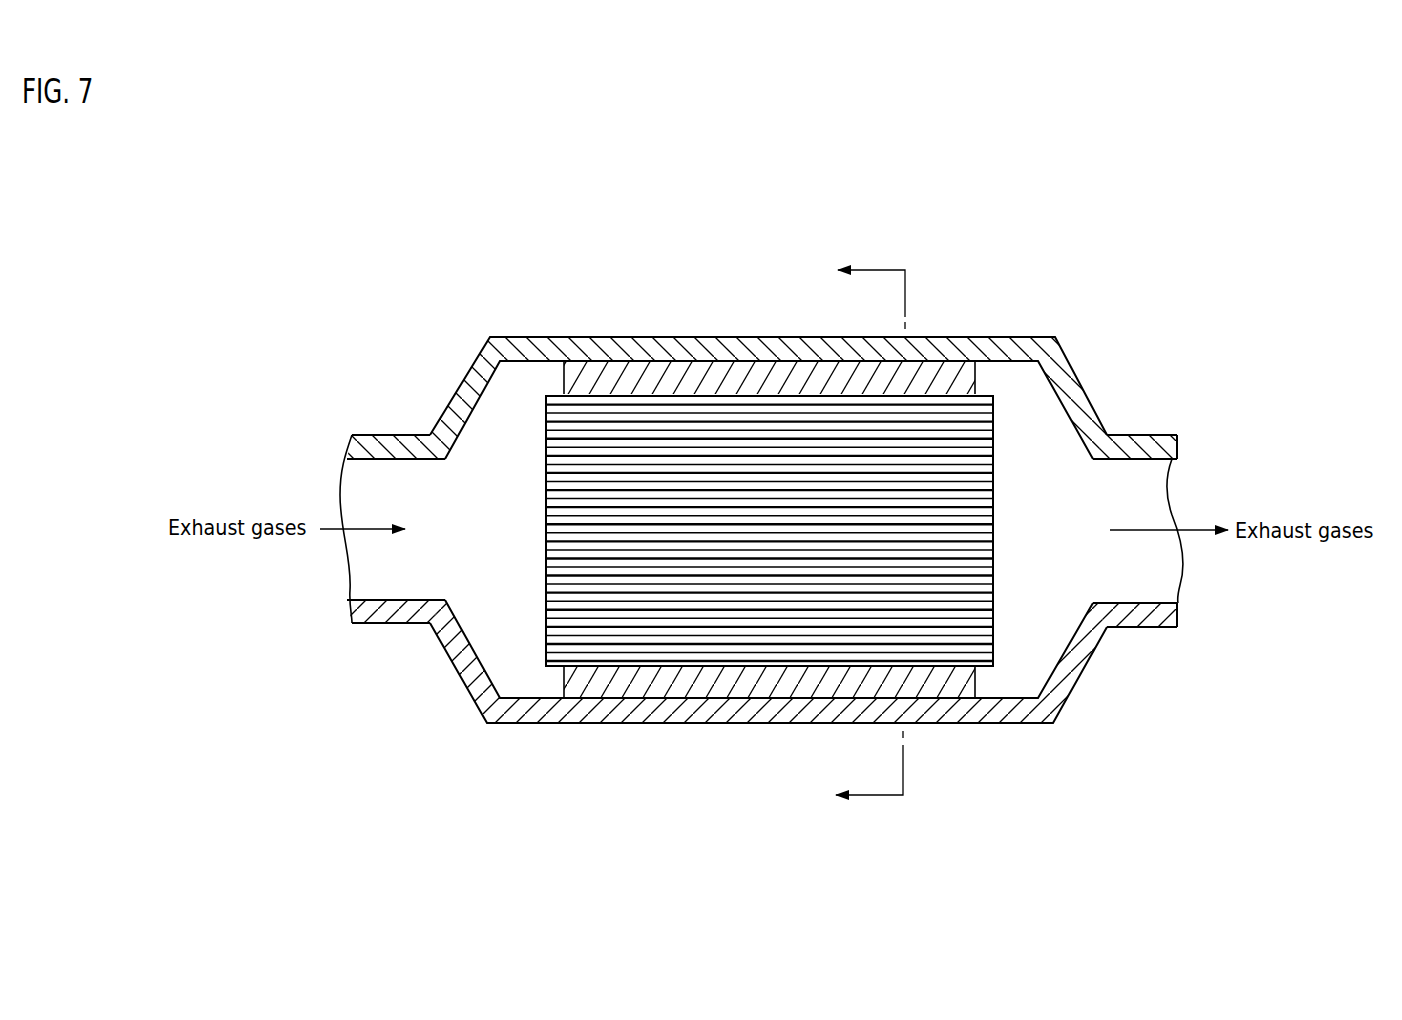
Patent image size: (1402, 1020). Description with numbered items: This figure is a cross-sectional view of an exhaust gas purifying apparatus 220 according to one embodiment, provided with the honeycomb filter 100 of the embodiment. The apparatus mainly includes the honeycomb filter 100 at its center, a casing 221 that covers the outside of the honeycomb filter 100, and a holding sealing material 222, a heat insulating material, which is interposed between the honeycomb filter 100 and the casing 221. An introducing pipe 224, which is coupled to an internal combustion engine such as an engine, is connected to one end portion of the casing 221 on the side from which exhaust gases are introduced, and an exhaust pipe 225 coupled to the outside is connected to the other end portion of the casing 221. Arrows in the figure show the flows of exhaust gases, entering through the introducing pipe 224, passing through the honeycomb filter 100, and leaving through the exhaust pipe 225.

The honeycomb filter 100 is at (1004, 433).
The exhaust gas purifying apparatus 220 is at (964, 269).
The casing 221 is at (1013, 717).
The holding sealing material 222 is at (650, 375).
The introducing pipe 224 is at (358, 477).
The exhaust pipe 225 is at (1145, 487).